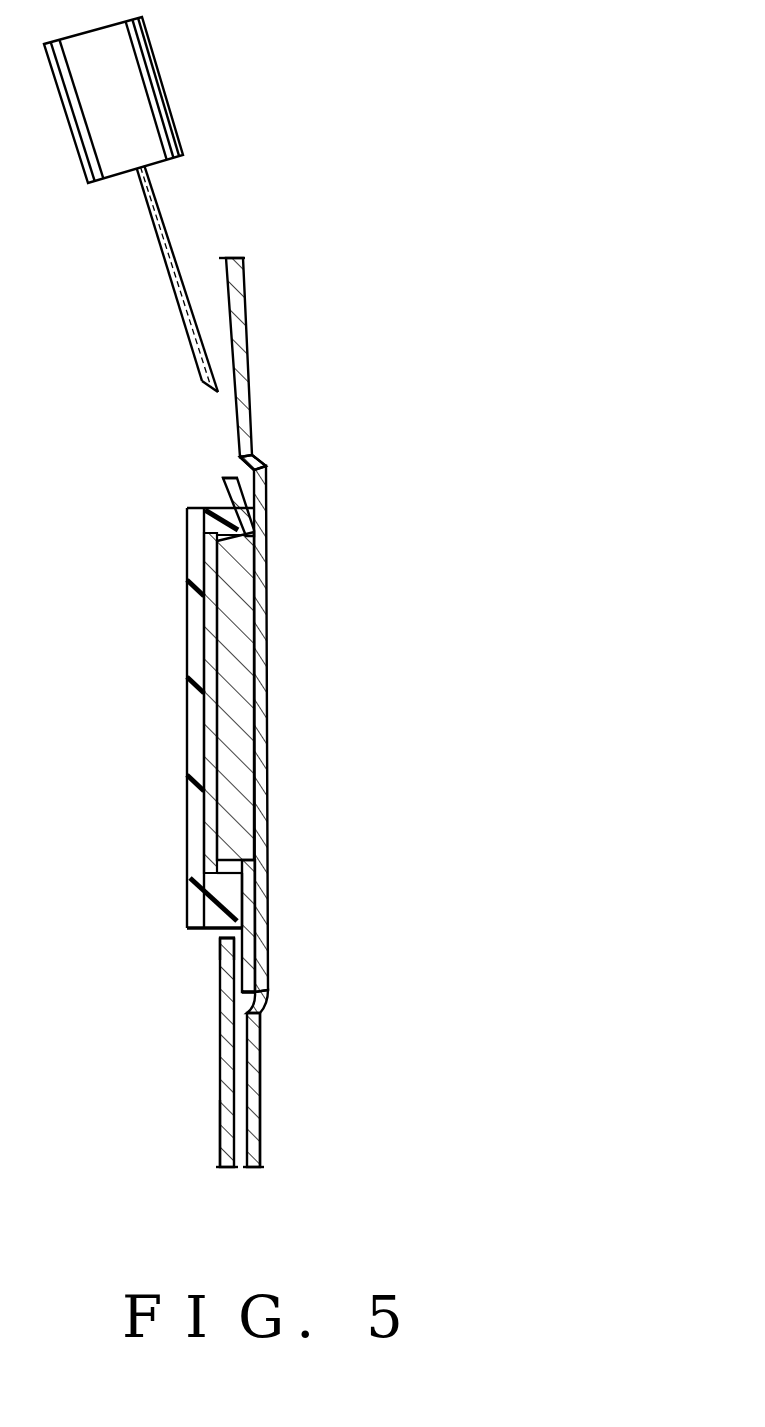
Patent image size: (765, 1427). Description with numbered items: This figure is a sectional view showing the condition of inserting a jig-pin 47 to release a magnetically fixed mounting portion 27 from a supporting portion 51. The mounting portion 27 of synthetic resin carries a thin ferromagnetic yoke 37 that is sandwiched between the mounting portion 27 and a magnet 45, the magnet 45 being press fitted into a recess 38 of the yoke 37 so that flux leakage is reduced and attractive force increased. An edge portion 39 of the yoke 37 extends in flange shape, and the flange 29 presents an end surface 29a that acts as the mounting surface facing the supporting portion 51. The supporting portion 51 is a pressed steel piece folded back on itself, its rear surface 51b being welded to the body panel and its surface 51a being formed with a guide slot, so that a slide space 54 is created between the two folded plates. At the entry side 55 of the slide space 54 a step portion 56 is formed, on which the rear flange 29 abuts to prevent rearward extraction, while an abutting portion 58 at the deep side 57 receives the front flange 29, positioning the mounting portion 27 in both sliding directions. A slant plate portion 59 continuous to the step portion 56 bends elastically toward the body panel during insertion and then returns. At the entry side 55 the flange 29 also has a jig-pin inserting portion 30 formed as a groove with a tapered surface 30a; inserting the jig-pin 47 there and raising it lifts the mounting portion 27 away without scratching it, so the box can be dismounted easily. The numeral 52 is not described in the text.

The jig-pin 47 is at (165, 84).
The slant plate portion 59 is at (246, 308).
The step portion 56 is at (253, 460).
The entry side 55 is at (267, 468).
The flange 29 is at (224, 493).
The jig-pin inserting portion 30 is at (256, 504).
The tapered surface 30a is at (230, 478).
The mounting portion 27 is at (187, 566).
The yoke 37 is at (204, 665).
The recess 38 is at (224, 703).
The magnet 45 is at (240, 695).
The edge portion 39 is at (256, 885).
The end surface 29a is at (267, 975).
The conductive layer 52 is at (260, 1038).
The supporting portion 51 is at (260, 1088).
The surface 51a is at (217, 1105).
The rear surface 51b is at (260, 1137).
The slide space 54 is at (238, 955).
The deep side 57 is at (240, 978).
The abutting portion 58 is at (240, 997).